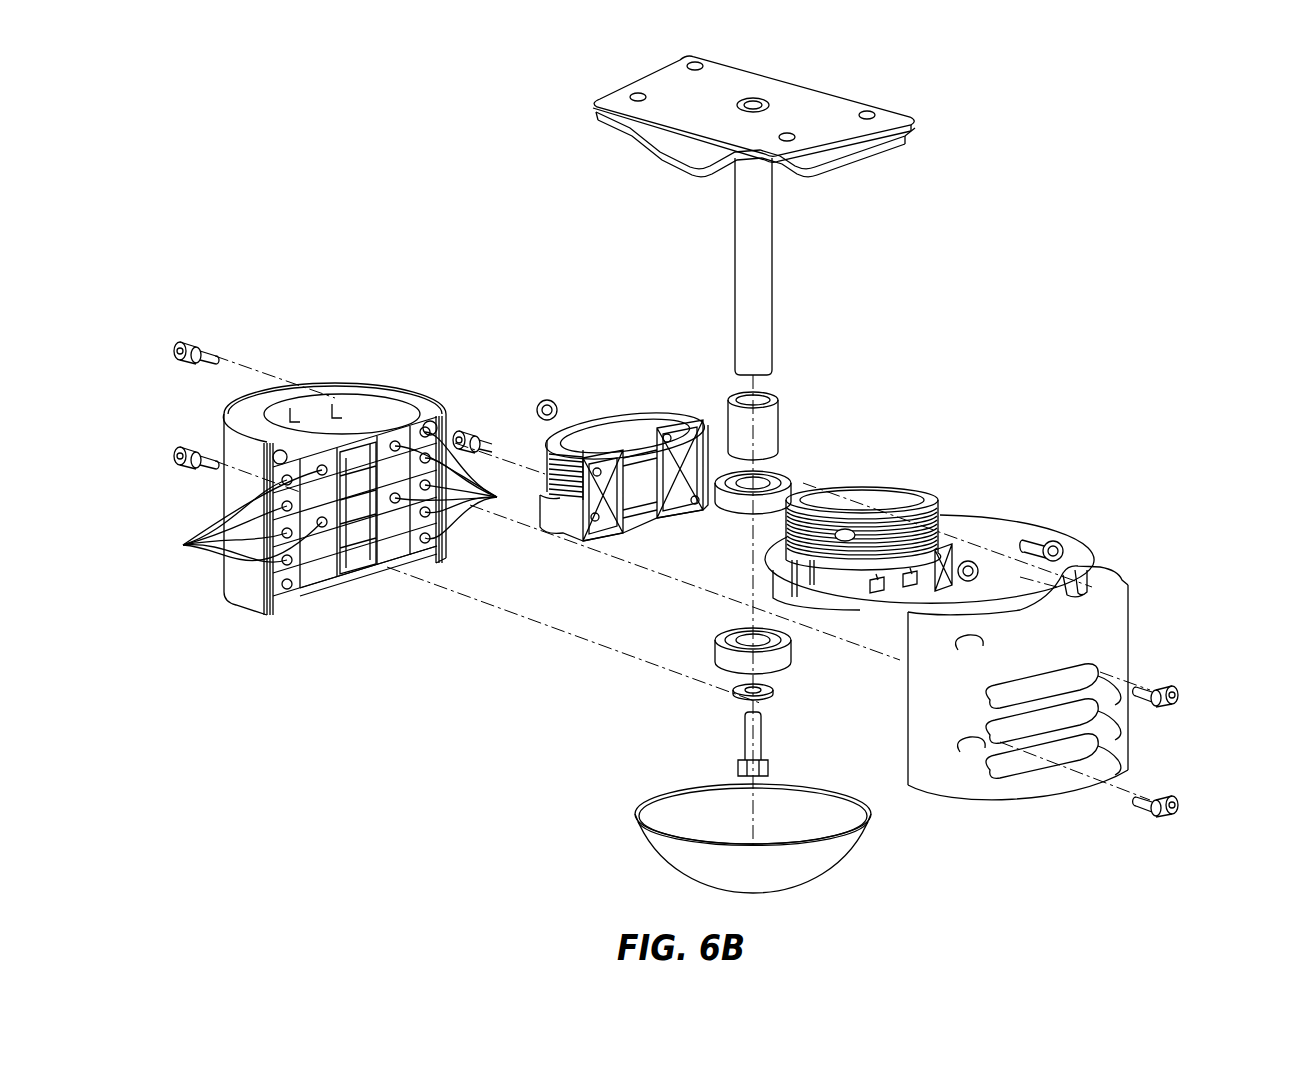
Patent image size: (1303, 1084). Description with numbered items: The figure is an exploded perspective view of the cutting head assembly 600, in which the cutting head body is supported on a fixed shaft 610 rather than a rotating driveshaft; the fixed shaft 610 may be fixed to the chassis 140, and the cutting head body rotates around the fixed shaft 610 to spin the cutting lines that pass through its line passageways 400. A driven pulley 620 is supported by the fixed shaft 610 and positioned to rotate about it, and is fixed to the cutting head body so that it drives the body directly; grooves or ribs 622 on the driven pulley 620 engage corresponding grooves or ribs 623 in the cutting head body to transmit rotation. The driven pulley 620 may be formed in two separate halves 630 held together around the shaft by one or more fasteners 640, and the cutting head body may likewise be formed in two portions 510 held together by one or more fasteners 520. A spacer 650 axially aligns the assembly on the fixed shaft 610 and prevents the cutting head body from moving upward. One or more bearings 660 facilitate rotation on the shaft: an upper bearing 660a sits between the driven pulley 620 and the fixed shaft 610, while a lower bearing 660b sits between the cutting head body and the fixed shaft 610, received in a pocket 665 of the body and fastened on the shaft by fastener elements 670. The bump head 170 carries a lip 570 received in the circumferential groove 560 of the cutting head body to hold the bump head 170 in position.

The chassis 140 is at (813, 97).
The fixed shaft 610 is at (773, 262).
The spacer 650 is at (778, 402).
The bearings 660 is at (751, 529).
The upper bearing 660a is at (792, 486).
The lower bearing 660b is at (715, 641).
The fastener elements 670 is at (746, 714).
The bump head 170 is at (636, 817).
The lip 570 is at (812, 846).
The portions 510 is at (272, 400).
The fasteners 520 is at (176, 352).
The grooves or ribs 623 is at (294, 416).
The pocket 665 is at (365, 562).
The circumferential groove 560 is at (430, 562).
The line passageways 400 is at (339, 508).
The driven pulley 620 is at (598, 436).
The halves 630 is at (637, 418).
The grooves or ribs 622 is at (910, 586).
The fasteners 640 is at (468, 432).
The cutting head assembly 600 is at (1077, 366).